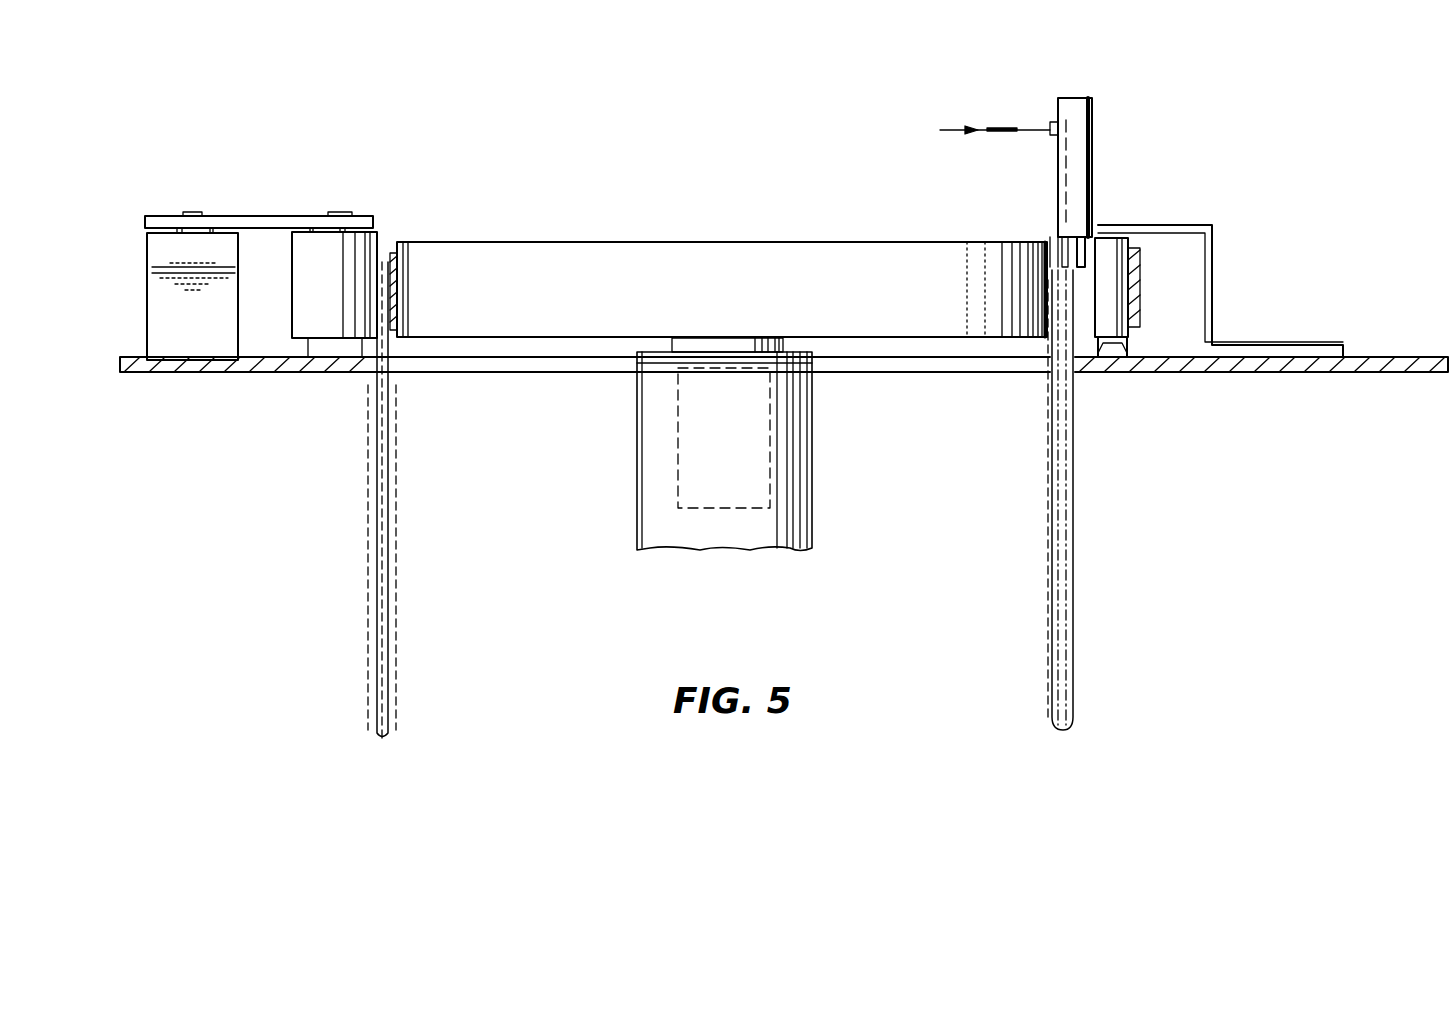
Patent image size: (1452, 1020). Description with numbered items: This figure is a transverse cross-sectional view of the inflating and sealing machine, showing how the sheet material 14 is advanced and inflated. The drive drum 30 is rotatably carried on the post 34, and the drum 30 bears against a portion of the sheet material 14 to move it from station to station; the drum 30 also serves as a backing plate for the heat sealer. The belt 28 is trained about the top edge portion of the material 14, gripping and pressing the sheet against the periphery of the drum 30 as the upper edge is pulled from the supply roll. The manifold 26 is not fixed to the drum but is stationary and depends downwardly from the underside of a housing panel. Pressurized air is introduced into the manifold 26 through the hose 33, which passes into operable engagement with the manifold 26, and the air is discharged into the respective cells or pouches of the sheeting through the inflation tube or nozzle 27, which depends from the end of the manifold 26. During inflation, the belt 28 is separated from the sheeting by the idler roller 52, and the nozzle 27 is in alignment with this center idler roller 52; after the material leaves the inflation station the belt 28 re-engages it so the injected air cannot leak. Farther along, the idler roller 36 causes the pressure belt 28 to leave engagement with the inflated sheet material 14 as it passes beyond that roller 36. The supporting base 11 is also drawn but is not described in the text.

The base plate 11 is at (1390, 357).
The sheet material 14 is at (1078, 656).
The manifold 26 is at (1082, 180).
The inflation tube 27 is at (1070, 253).
The belt 28 is at (1135, 283).
The drive drum 30 is at (618, 255).
The hose 33 is at (1023, 124).
The post 34 is at (683, 452).
The idler roller 36 is at (317, 240).
The idler roller 52 is at (1115, 327).